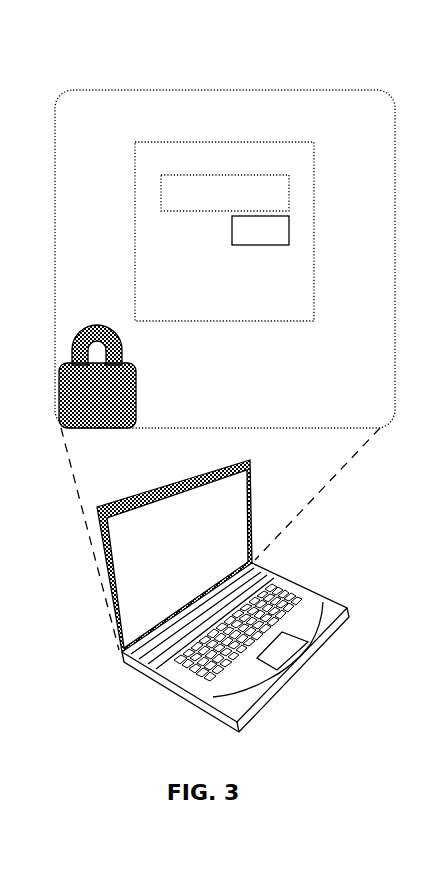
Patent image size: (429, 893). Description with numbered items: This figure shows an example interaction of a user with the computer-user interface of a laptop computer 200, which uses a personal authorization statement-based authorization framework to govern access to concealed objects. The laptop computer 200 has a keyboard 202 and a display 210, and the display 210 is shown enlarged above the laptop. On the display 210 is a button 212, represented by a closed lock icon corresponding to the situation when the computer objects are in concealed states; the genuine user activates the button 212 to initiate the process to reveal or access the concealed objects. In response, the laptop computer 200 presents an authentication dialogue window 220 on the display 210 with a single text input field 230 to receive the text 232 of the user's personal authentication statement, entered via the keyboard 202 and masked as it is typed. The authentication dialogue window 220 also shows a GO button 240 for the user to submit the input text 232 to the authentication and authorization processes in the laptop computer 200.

The laptop computer 200 is at (125, 695).
The keyboard 202 is at (275, 590).
The display 210 is at (78, 90).
The button 212 is at (58, 368).
The authentication dialogue window 220 is at (313, 142).
The text input field 230 is at (289, 177).
The text 232 is at (197, 187).
The GO button 240 is at (289, 226).